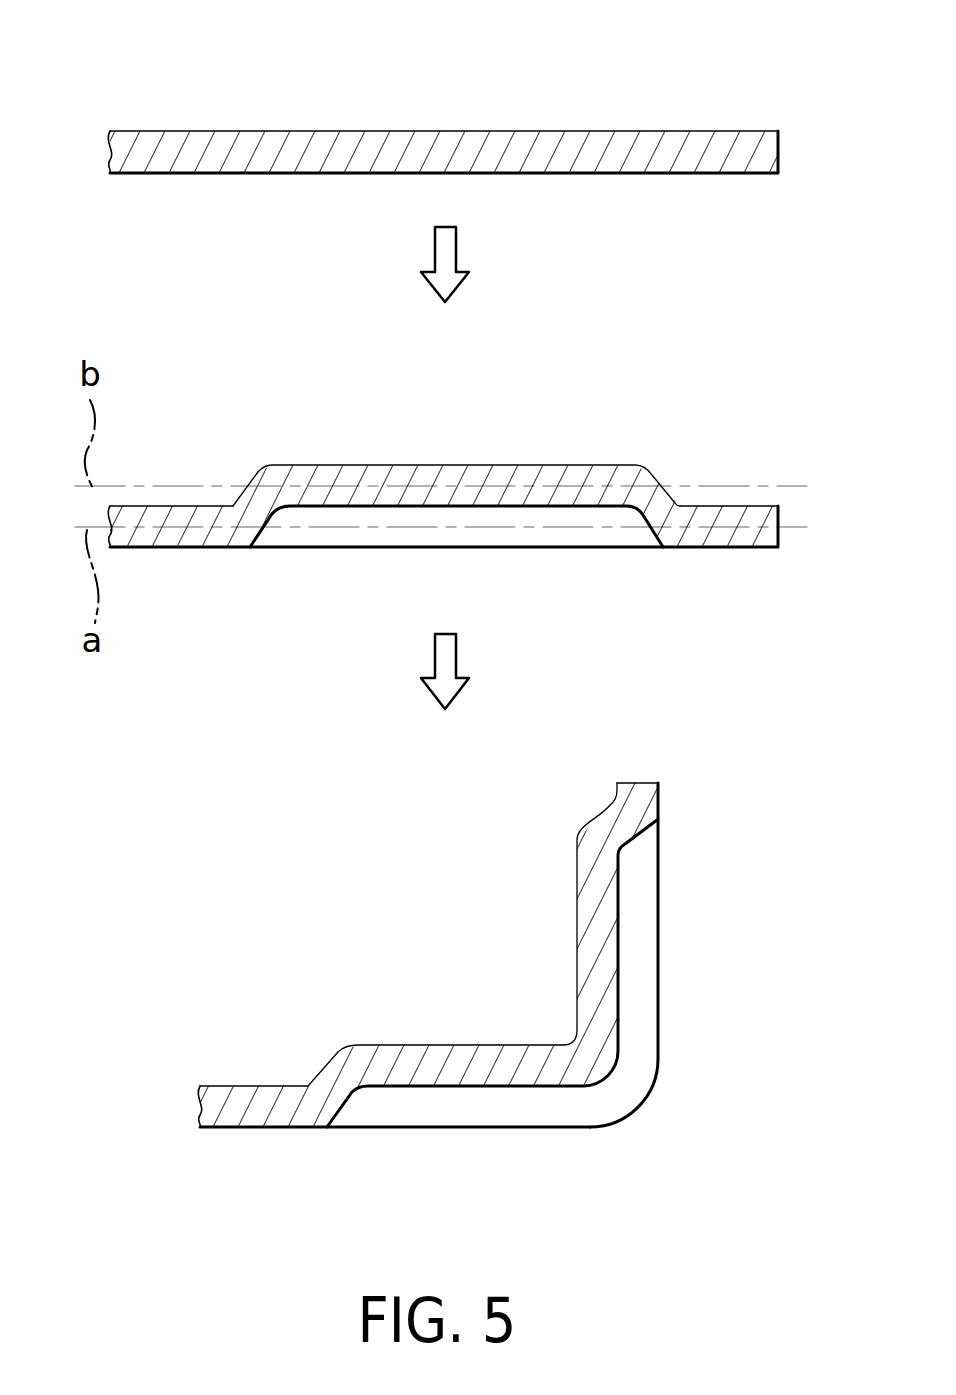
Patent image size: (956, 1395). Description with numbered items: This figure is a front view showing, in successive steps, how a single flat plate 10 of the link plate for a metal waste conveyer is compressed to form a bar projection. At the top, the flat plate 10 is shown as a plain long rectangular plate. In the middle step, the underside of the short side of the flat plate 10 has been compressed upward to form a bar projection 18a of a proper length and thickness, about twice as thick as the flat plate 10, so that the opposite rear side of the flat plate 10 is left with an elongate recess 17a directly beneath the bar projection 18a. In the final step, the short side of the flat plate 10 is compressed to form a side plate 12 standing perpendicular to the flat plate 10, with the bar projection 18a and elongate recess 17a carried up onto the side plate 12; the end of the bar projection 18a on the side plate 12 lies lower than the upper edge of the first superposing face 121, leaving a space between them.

The flat plate 10 is at (326, 114).
The bar projection 18a is at (549, 482).
The elongate recess 17a is at (575, 522).
The side plate 12 is at (658, 853).
The first superposing face 121 is at (630, 805).